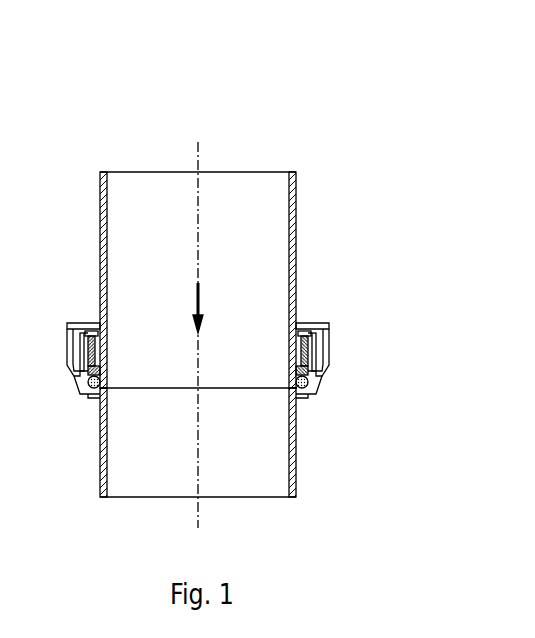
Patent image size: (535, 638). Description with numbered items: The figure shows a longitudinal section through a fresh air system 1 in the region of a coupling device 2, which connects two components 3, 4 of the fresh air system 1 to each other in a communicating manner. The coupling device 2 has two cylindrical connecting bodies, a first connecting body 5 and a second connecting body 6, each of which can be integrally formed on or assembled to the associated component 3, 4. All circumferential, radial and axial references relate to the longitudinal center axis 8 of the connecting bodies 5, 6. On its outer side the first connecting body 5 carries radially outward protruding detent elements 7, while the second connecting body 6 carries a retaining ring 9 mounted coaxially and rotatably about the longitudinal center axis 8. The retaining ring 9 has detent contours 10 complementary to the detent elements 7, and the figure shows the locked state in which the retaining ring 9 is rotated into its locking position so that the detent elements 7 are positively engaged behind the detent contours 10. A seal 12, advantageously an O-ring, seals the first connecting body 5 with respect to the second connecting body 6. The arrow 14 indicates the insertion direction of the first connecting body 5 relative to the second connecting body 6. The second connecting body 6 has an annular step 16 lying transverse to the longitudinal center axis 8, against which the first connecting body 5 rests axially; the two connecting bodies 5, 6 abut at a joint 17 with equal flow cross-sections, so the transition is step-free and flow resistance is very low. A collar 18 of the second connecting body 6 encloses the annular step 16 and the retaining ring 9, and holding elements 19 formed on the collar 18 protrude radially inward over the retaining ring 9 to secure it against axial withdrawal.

The fresh air system 1 is at (253, 149).
The coupling device 2 is at (57, 308).
The component 3 is at (99, 207).
The component 4 is at (99, 446).
The first connecting body 5 is at (149, 190).
The second connecting body 6 is at (145, 488).
The detent elements 7 is at (77, 378).
The longitudinal center axis 8 is at (198, 153).
The retaining ring 9 is at (73, 335).
The detent contours 10 is at (73, 362).
The seal 12 is at (307, 397).
The insertion direction 14 is at (200, 298).
The annular step 16 is at (90, 388).
The joint 17 is at (150, 385).
The collar 18 is at (336, 343).
The holding elements 19 is at (90, 332).